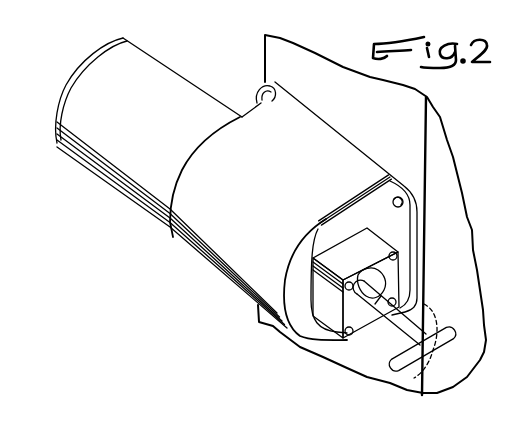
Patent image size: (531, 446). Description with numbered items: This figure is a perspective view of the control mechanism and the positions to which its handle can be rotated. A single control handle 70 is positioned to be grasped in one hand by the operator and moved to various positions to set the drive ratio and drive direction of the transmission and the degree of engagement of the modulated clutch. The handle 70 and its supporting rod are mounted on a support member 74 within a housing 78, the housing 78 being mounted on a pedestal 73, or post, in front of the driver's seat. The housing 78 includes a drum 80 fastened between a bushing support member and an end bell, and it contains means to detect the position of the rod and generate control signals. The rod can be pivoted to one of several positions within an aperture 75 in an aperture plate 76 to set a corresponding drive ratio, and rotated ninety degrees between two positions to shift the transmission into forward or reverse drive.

The control handle 70 is at (457, 342).
The pedestal 73 is at (446, 128).
The support member 74 is at (364, 157).
The aperture 75 is at (388, 263).
The aperture plate 76 is at (360, 322).
The housing 78 is at (238, 286).
The drum 80 is at (181, 81).